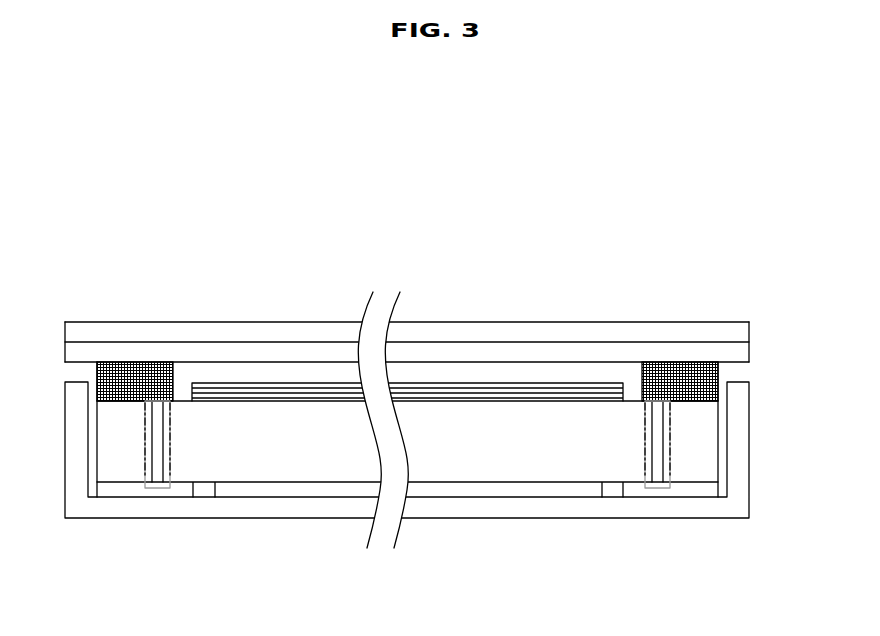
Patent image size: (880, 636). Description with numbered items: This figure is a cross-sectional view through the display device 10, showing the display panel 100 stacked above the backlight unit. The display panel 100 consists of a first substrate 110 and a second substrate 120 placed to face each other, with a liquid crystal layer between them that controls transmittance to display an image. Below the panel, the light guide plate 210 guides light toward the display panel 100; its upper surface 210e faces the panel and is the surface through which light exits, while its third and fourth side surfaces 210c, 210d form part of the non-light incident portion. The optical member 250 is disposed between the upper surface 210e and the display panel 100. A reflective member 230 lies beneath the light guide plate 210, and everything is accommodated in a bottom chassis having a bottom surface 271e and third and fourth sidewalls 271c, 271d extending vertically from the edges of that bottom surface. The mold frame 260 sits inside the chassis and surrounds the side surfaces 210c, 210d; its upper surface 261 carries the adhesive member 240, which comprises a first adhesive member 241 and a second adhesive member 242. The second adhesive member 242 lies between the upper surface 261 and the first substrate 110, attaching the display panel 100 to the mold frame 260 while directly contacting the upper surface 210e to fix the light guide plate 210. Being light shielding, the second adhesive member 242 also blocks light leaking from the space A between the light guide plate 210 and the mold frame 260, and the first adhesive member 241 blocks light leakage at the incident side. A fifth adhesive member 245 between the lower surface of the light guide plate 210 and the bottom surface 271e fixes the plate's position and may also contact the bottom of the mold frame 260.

The display device 10 is at (163, 165).
The display panel 100 is at (815, 300).
The first substrate 110 is at (743, 350).
The second substrate 120 is at (743, 333).
The light guide plate 210 is at (487, 472).
The third side surface of light guide plate 210c is at (165, 432).
The fourth side surface of light guide plate 210d is at (653, 422).
The upper surface of light guide plate 210e is at (440, 400).
The reflective member 230 is at (295, 492).
The adhesive member 240 is at (397, 193).
The first adhesive member 241 is at (164, 375).
The second adhesive member 242 is at (664, 386).
The fifth adhesive member 245 is at (135, 493).
The optical member 250 is at (317, 368).
The mold frame 260 is at (710, 418).
The upper surface of mold frame 261 is at (698, 398).
The third sidewall of bottom chassis 271c is at (66, 447).
The fourth sidewall of bottom chassis 271d is at (752, 445).
The bottom surface of bottom chassis 271e is at (608, 492).
The space between light guide plate and mold frame A is at (172, 459).